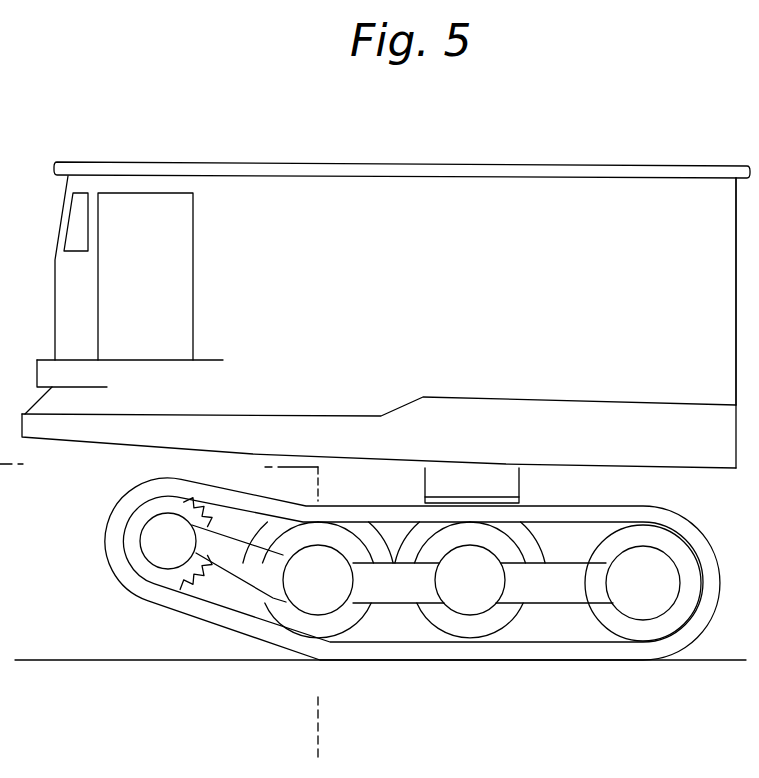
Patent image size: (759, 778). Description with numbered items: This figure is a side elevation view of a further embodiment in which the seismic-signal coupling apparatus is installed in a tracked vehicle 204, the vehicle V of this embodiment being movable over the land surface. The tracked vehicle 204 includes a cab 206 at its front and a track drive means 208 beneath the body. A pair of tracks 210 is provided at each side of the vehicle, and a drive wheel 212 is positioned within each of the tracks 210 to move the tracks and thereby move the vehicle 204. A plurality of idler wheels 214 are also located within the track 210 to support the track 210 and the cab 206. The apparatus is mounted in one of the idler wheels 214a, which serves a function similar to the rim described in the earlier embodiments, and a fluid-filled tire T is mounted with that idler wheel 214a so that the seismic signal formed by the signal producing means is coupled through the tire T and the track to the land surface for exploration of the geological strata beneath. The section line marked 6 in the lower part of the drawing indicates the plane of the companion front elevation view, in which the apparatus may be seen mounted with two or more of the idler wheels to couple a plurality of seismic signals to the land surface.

The vehicle V is at (489, 158).
The tracked vehicle 204 is at (329, 160).
The cab 206 is at (601, 208).
The track drive means 208 is at (701, 516).
The track 210 is at (592, 507).
The drive wheel 212 is at (133, 565).
The fluid-filled tire T is at (246, 599).
The idler wheel 214a is at (345, 627).
The idler wheels 214 is at (603, 623).
The section line for FIG. 6 is at (308, 730).